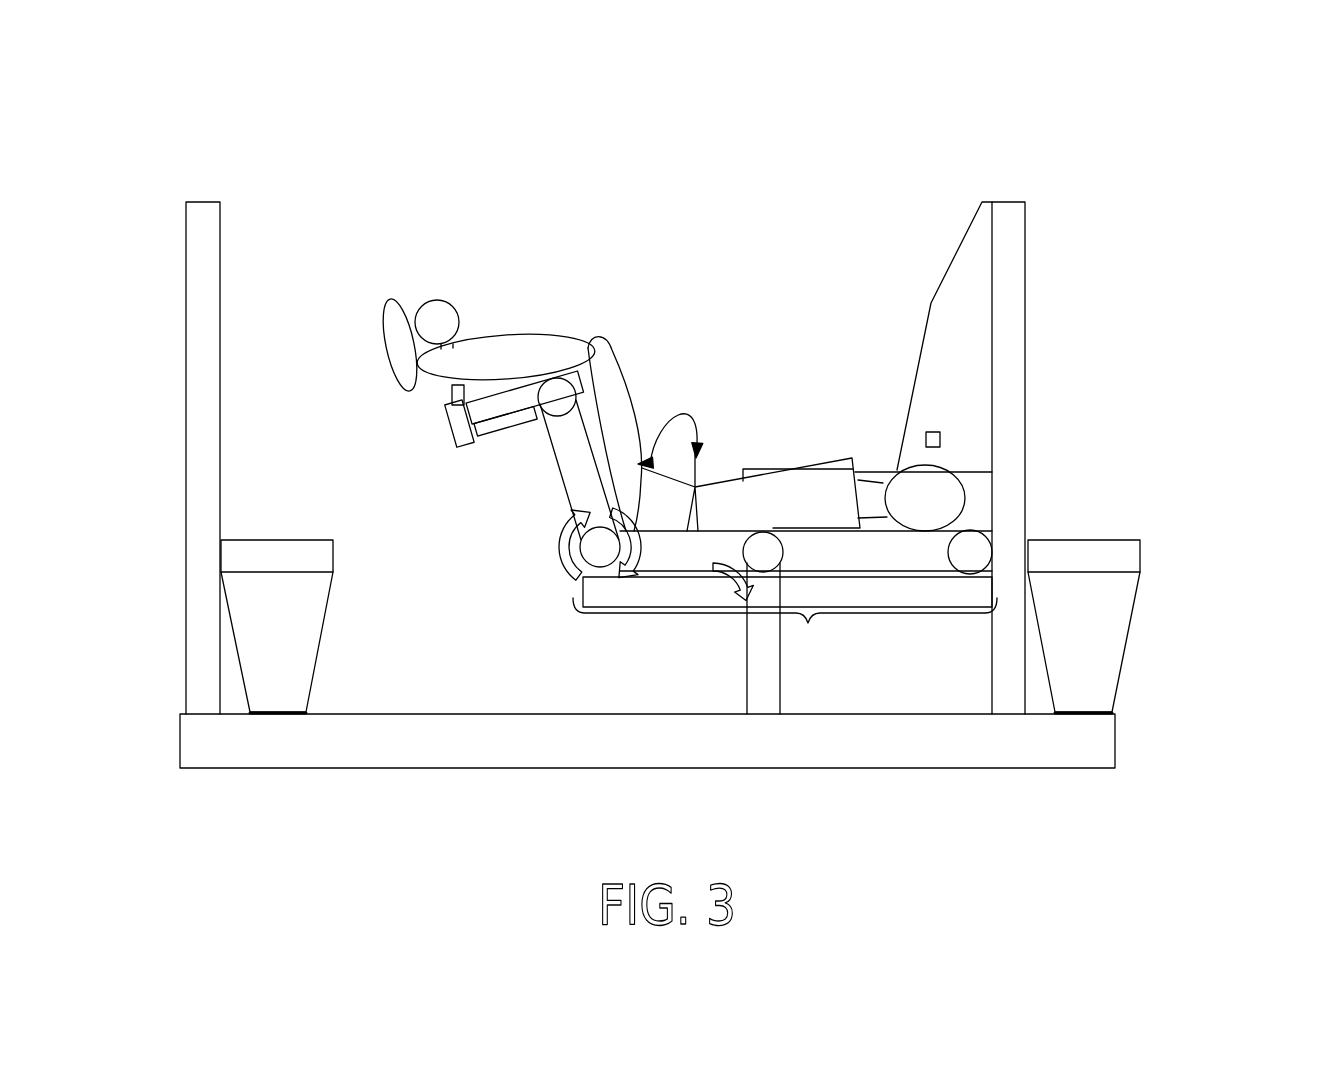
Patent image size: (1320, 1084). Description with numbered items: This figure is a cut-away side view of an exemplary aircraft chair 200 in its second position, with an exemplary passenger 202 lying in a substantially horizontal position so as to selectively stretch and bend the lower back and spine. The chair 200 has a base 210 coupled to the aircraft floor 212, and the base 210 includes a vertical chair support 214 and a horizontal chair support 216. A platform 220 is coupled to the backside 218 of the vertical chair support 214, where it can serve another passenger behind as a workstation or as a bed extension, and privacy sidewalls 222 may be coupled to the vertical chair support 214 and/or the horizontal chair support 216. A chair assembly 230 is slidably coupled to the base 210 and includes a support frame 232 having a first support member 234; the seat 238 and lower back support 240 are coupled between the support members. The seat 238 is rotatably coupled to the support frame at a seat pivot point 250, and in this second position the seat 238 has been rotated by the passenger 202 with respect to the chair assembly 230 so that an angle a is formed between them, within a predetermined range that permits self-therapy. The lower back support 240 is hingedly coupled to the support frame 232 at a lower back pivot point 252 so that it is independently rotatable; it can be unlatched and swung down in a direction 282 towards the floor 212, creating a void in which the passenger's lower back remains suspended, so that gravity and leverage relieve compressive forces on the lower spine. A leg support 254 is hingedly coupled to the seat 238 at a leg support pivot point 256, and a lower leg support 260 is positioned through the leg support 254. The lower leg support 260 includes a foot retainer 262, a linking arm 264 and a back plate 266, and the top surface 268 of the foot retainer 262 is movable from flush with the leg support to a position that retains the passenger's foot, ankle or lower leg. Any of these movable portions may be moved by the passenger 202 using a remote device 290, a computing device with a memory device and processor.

The chair 200 is at (1045, 158).
The passenger 202 is at (727, 477).
The base 210 is at (1040, 529).
The aircraft floor 212 is at (993, 758).
The vertical chair support 214 is at (1018, 446).
The horizontal chair support 216 is at (612, 592).
The backside 218 is at (1027, 308).
The platform 220 is at (1112, 613).
The privacy sidewalls 222 is at (945, 327).
The chair assembly 230 is at (562, 521).
The support frame 232 is at (785, 549).
The first support member 234 is at (671, 555).
The seat 238 is at (580, 485).
The lower back support 240 is at (762, 688).
The seat pivot point 250 is at (593, 560).
The lower back pivot point 252 is at (823, 507).
The leg support 254 is at (478, 419).
The leg support pivot point 256 is at (551, 410).
The lower leg support 260 is at (400, 394).
The foot retainer 262 is at (440, 320).
The linking arm 264 is at (452, 390).
The back plate 266 is at (484, 437).
The top surface 268 is at (437, 292).
The direction 282 is at (713, 600).
The remote device 290 is at (938, 430).